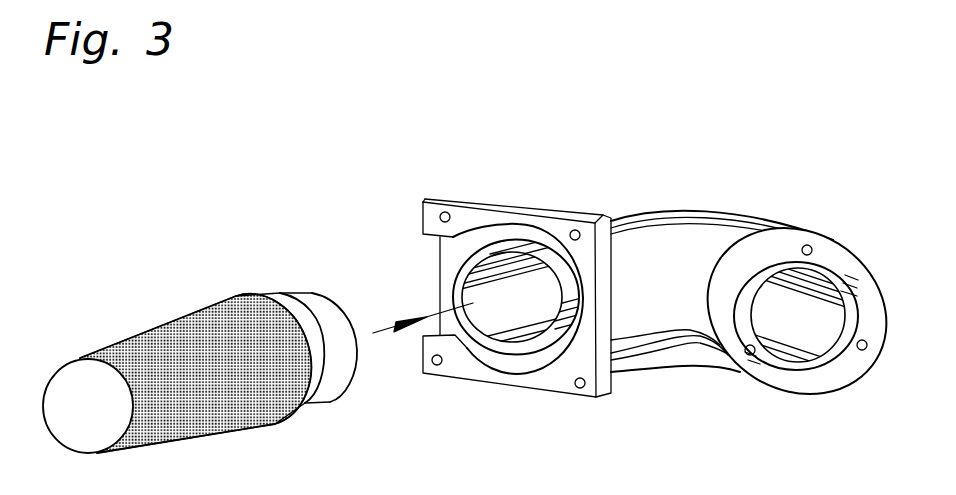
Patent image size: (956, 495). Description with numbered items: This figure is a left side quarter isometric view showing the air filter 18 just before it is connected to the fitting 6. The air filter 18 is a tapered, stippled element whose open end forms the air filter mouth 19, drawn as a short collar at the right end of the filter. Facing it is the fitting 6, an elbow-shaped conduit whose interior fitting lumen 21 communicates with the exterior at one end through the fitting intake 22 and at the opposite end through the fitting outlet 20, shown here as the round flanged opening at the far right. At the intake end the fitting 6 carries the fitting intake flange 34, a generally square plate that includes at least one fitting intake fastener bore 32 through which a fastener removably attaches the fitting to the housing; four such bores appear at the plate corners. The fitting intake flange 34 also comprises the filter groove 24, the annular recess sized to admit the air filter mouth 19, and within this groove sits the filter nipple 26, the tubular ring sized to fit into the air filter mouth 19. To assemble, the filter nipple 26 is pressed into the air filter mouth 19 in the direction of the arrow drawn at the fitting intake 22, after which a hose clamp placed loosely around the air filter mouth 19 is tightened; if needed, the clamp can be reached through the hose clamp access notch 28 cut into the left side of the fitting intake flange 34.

The fitting 6 is at (790, 215).
The air filter 18 is at (163, 318).
The air filter mouth 19 is at (312, 290).
The fitting outlet 20 is at (800, 390).
The fitting lumen 21 is at (787, 310).
The fitting intake 22 is at (398, 330).
The filter groove 24 is at (505, 228).
The filter nipple 26 is at (466, 345).
The hose clamp access notch 28 is at (442, 258).
The fitting intake fastener bore 32 is at (440, 213).
The fitting intake flange 34 is at (560, 383).